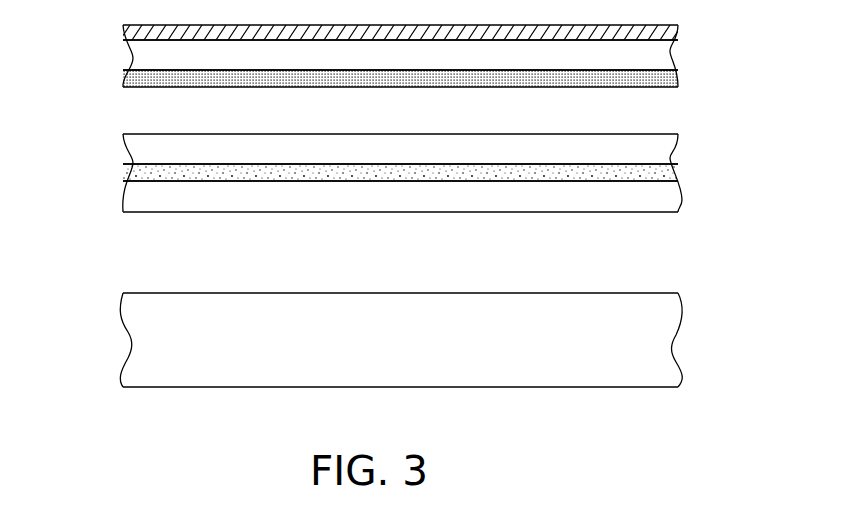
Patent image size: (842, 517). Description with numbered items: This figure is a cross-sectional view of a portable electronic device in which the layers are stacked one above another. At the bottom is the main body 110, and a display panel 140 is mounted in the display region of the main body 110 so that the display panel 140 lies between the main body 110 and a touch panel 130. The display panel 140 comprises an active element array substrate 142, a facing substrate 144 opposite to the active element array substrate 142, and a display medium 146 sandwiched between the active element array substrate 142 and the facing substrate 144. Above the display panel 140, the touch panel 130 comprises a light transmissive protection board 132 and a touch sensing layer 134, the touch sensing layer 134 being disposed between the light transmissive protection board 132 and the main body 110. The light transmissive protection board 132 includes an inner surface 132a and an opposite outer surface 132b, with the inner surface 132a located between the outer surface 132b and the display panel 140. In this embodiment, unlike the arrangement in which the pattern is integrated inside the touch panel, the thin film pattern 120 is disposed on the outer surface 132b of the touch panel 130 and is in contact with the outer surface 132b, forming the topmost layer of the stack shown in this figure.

The main body 110 is at (162, 347).
The thin film pattern 120 is at (675, 37).
The touch panel 130 is at (63, 28).
The light transmissive protection board 132 is at (145, 59).
The inner surface 132a is at (629, 70).
The outer surface 132b is at (647, 42).
The touch sensing layer 134 is at (143, 72).
The display panel 140 is at (63, 125).
The active element array substrate 142 is at (145, 198).
The facing substrate 144 is at (148, 148).
The display medium 146 is at (140, 165).